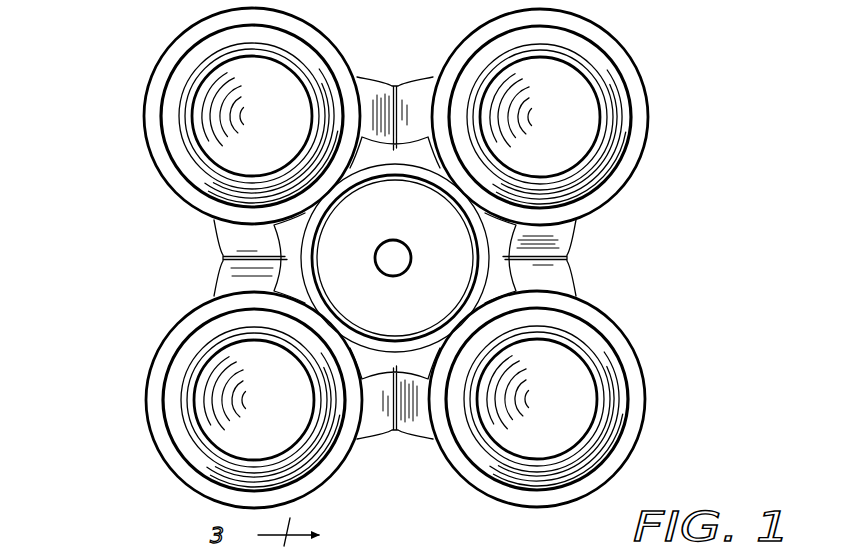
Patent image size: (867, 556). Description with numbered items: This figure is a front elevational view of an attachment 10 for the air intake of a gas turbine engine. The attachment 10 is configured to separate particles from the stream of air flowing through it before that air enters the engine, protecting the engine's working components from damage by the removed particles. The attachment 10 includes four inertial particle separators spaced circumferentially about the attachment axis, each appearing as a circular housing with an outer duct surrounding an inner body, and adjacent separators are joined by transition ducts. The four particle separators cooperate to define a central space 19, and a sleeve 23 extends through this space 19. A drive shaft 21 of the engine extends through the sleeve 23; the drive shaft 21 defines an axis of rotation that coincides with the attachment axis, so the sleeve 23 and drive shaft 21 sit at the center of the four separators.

The attachment 10 is at (124, 66).
The space 19 is at (457, 291).
The drive shaft 21 is at (404, 243).
The sleeve 23 is at (364, 197).